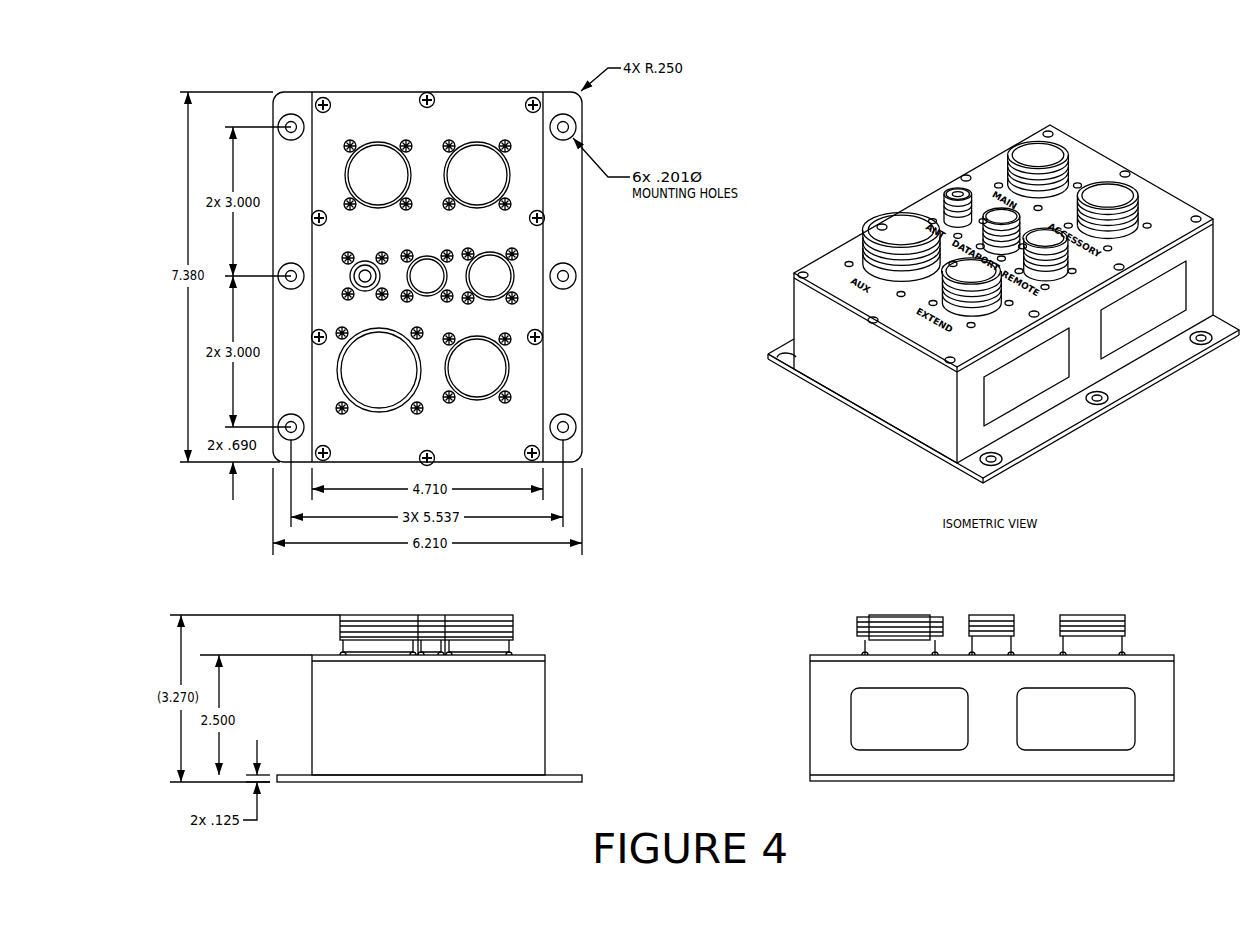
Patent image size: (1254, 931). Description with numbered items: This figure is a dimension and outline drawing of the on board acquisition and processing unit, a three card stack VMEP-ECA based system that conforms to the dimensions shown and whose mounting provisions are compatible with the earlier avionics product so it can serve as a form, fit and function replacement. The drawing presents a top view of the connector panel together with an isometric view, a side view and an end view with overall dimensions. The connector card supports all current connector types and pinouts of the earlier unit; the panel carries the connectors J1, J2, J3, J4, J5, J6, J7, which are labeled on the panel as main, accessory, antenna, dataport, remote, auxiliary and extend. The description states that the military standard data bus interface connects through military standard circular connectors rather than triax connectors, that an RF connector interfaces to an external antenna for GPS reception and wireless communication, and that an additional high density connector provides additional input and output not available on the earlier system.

The MAIN connector J1 is at (378, 177).
The ACCESSORY connector J2 is at (475, 177).
The ANT connector J3 is at (365, 278).
The DATAPORT connector J4 is at (423, 277).
The REMOTE connector J5 is at (490, 276).
The AUX connector J6 is at (379, 372).
The EXTEND connector J7 is at (477, 371).